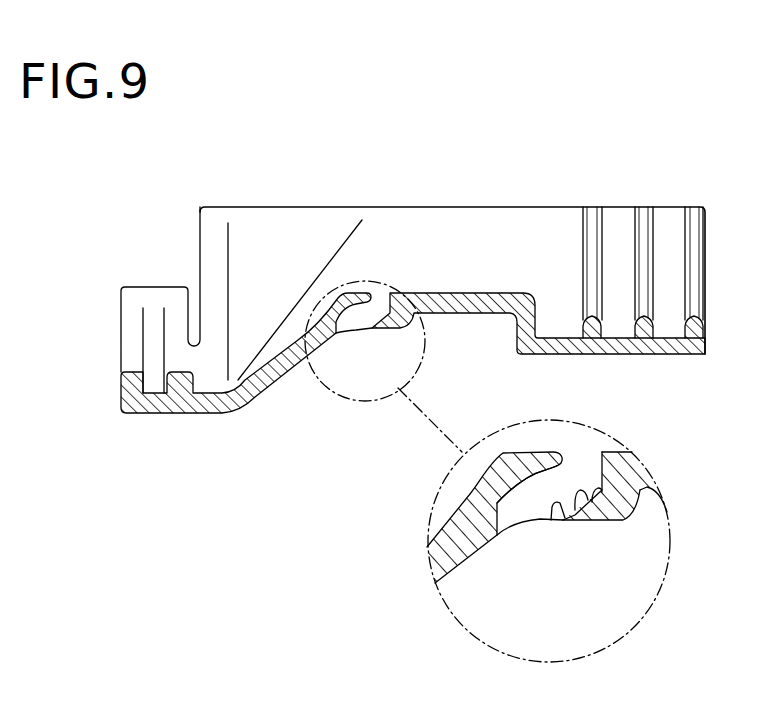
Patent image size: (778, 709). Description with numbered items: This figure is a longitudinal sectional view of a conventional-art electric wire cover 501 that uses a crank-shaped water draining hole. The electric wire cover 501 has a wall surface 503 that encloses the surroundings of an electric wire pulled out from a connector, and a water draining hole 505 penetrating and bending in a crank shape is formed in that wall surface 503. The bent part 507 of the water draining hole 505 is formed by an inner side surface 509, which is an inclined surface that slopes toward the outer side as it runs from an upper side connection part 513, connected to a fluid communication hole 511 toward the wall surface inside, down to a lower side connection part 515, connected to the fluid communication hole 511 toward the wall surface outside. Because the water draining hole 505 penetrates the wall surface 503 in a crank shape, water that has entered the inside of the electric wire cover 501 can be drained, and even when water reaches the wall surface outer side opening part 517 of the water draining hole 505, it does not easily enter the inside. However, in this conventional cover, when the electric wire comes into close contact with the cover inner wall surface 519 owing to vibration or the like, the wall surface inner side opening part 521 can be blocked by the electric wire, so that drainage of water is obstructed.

The electric wire cover 501 is at (620, 207).
The wall surface 503 is at (457, 313).
The water draining hole 505 is at (352, 332).
The bent part 507 is at (550, 482).
The inner side surface 509 is at (586, 510).
The fluid communication hole 511 is at (606, 452).
The upper side connection part 513 is at (603, 498).
The lower side connection part 515 is at (552, 514).
The wall surface outer side opening part 517 is at (531, 524).
The cover inner wall surface 519 is at (427, 293).
The wall surface inner side opening part 521 is at (590, 462).